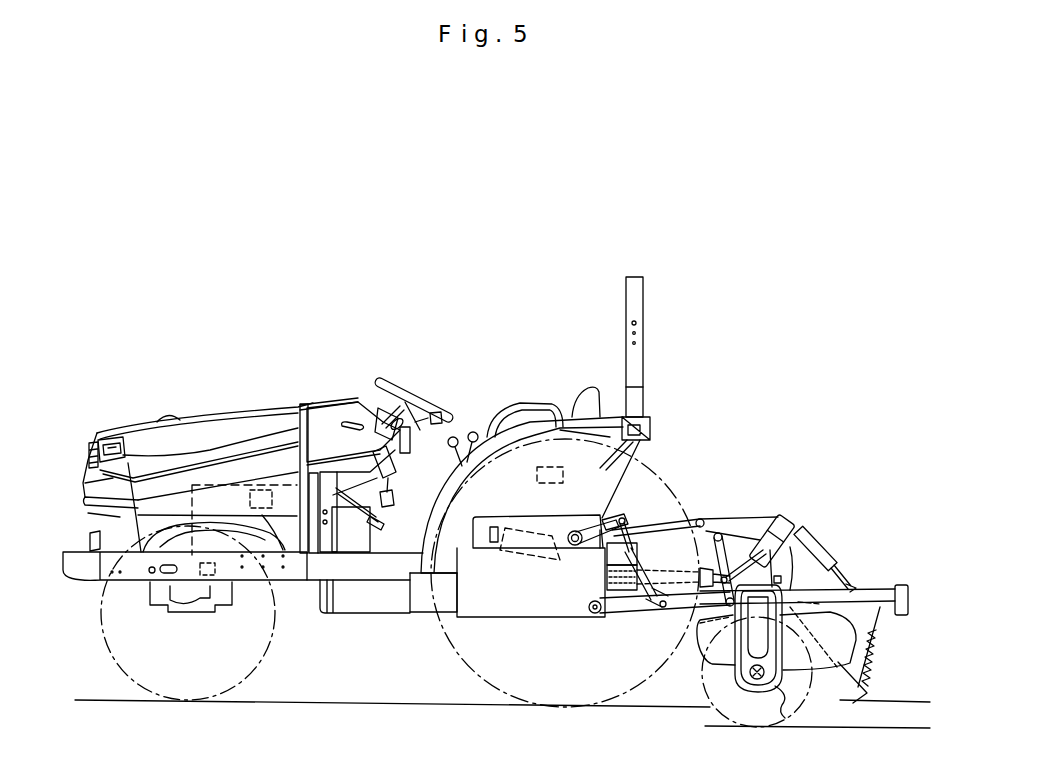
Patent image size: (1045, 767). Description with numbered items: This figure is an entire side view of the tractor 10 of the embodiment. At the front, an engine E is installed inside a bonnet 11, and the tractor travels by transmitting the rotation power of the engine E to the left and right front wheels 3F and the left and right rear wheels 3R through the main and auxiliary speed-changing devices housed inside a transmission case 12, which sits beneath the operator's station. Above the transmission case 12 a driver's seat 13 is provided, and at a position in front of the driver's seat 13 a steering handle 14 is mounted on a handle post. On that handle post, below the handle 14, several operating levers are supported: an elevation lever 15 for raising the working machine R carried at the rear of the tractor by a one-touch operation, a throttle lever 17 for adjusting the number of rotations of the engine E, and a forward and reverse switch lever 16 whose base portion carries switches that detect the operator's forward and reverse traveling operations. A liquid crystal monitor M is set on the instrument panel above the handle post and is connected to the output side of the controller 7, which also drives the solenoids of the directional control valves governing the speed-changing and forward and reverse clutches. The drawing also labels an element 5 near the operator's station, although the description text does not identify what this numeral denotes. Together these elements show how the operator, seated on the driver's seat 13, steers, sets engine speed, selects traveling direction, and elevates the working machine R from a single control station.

The tractor 10 is at (411, 318).
The bonnet 11 is at (221, 407).
The engine E is at (207, 485).
The liquid crystal monitor M is at (358, 396).
The elevation lever 15 is at (383, 404).
The steering handle 14 is at (392, 384).
The forward and reverse switch lever 16 is at (412, 404).
The throttle lever 17 is at (436, 410).
The shift lever 5 is at (466, 430).
The controller 7 is at (547, 465).
The driver's seat 13 is at (597, 388).
The transmission case 12 is at (424, 605).
The front wheel 3F is at (262, 657).
The rear wheel 3R is at (478, 675).
The working machine R is at (814, 511).